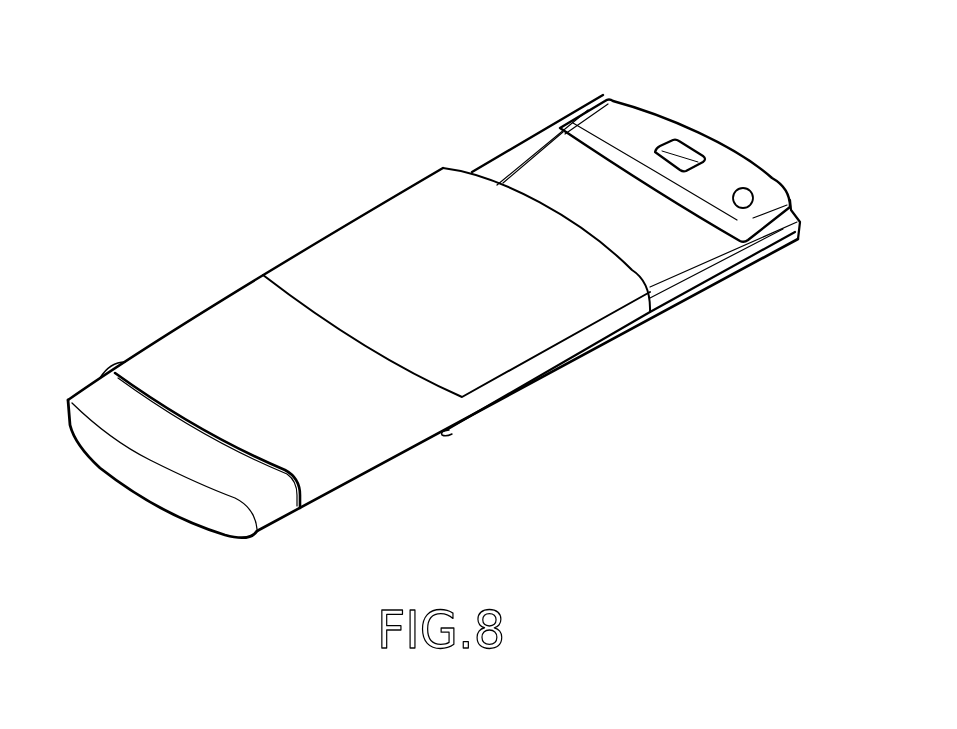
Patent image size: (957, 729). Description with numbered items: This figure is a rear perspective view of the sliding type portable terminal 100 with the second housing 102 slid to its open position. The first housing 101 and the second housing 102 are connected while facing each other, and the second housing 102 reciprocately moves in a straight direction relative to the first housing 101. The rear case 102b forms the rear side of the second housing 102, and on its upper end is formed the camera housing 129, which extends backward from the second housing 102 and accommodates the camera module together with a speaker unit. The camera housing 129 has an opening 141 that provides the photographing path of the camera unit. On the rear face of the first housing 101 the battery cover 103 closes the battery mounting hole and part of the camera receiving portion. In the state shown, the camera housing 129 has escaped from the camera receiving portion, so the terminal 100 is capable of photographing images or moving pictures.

The sliding type portable terminal 100 is at (424, 282).
The first housing 101 is at (110, 527).
The second housing 102 is at (482, 111).
The rear case 102b is at (655, 237).
The battery cover 103 is at (488, 318).
The camera housing 129 is at (652, 113).
The opening 141 is at (744, 197).